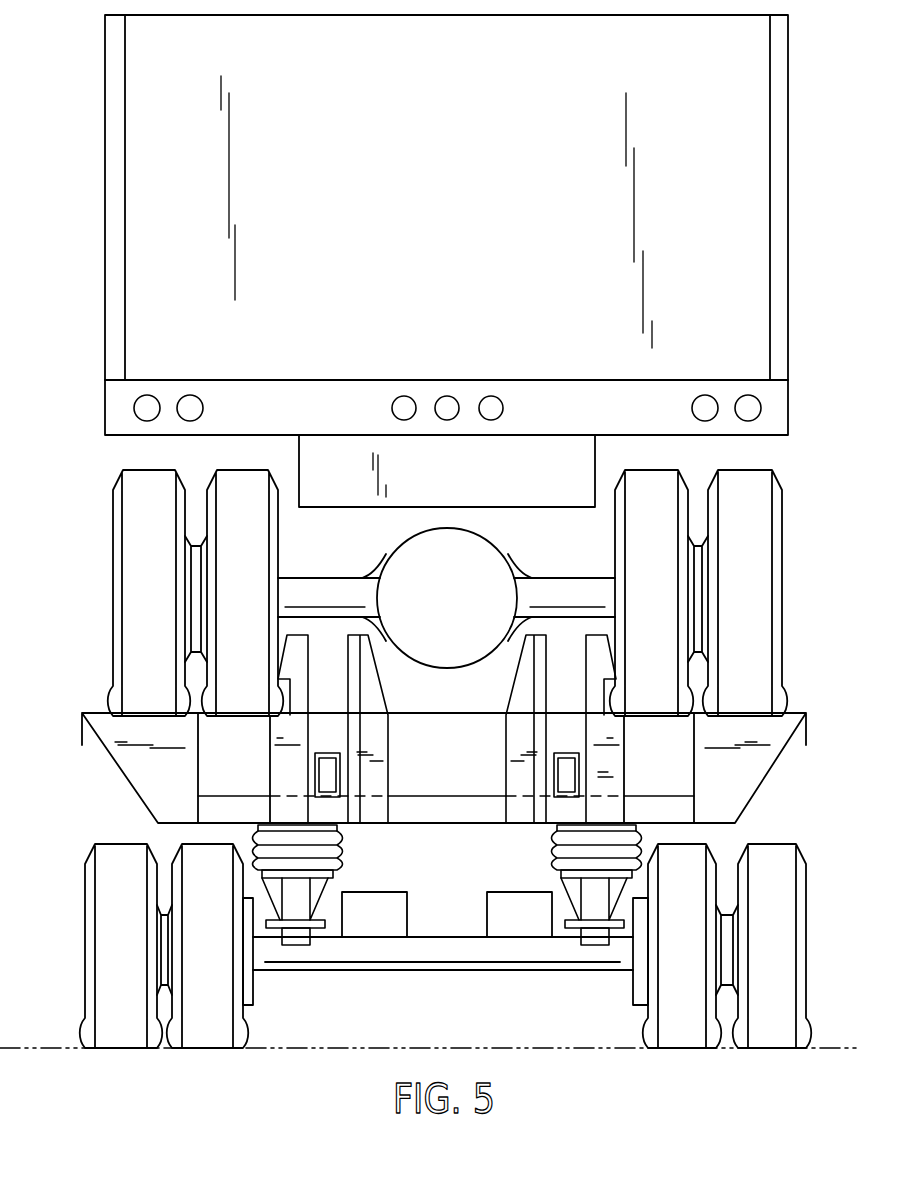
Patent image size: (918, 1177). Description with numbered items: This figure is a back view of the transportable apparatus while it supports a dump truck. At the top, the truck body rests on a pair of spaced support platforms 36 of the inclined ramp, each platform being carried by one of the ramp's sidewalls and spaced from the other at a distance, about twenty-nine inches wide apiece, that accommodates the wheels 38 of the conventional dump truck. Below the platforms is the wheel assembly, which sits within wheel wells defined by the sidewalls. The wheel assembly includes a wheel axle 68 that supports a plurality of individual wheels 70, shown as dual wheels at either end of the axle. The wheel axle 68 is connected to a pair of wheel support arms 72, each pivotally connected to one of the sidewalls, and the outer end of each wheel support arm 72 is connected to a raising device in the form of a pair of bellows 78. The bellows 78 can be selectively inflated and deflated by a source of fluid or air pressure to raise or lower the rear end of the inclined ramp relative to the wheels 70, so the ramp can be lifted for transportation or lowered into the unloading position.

The support platform 36 is at (100, 712).
The wheels 38 is at (753, 517).
The wheel axle 68 is at (443, 950).
The wheels 70 is at (116, 846).
The wheel support arm 72 is at (295, 900).
The bellows 78 is at (340, 846).